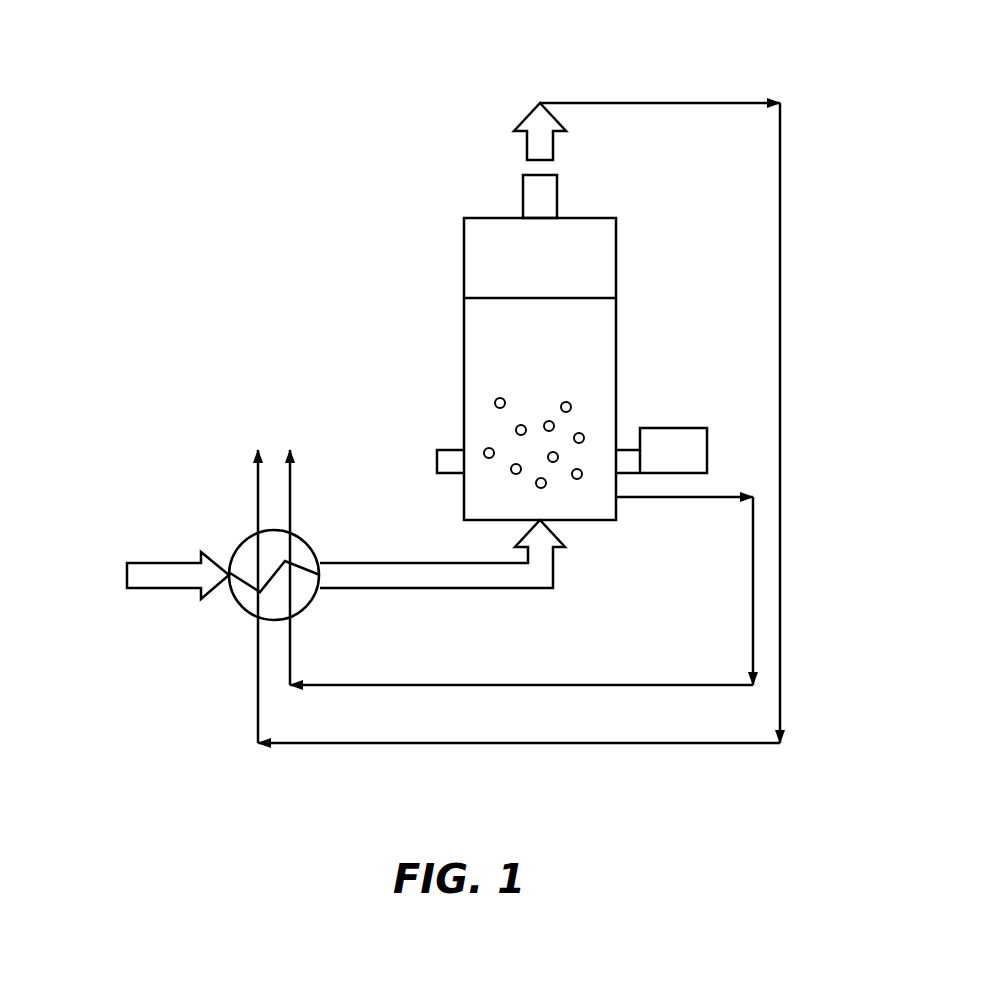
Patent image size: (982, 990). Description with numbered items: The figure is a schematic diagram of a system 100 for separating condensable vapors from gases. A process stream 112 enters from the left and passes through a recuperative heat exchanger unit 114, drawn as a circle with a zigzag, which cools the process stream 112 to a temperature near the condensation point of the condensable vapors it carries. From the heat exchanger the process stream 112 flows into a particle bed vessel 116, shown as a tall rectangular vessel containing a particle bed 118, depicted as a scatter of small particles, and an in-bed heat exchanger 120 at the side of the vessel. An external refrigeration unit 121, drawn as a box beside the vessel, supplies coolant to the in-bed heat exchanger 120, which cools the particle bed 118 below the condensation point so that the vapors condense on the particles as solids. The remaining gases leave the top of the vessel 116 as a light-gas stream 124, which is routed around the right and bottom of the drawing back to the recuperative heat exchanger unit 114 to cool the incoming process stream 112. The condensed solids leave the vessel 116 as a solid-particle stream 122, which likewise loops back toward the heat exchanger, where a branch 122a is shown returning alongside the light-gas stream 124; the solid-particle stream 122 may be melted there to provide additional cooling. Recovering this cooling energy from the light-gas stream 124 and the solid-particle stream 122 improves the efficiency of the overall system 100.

The system 100 is at (188, 222).
The process stream 112 is at (160, 572).
The recuperative heat exchanger unit 114 is at (250, 558).
The particle bed vessel 116 is at (463, 261).
The particle bed 118 is at (484, 381).
The in-bed heat exchanger 120 is at (451, 448).
The external refrigeration unit 121 is at (673, 428).
The solid-particle stream 122 is at (575, 684).
The recycle stream branch 122a is at (293, 502).
The light-gas stream 124 is at (665, 102).